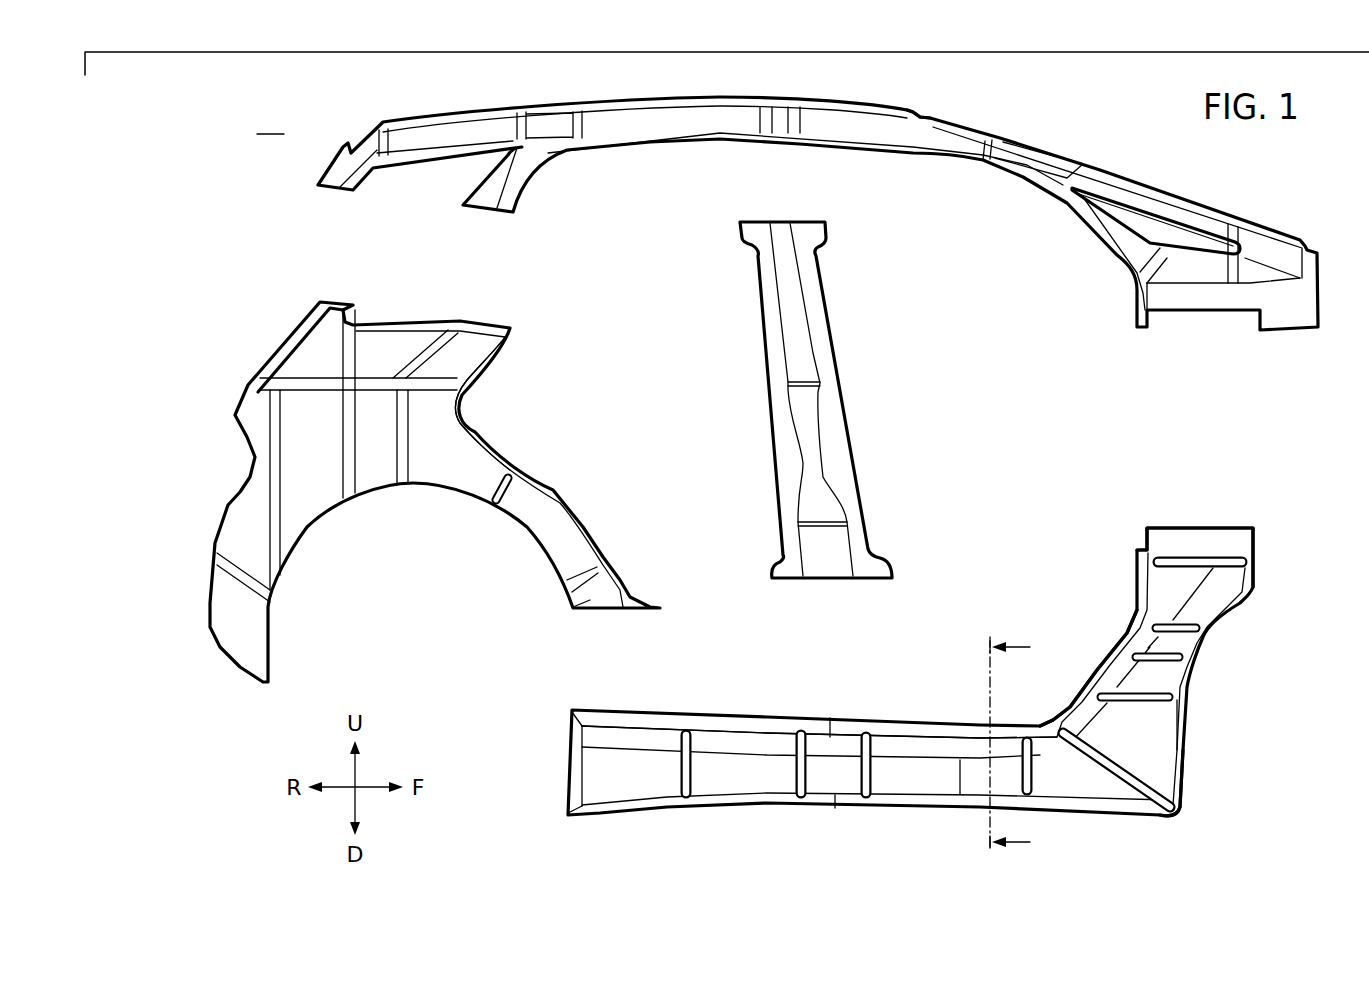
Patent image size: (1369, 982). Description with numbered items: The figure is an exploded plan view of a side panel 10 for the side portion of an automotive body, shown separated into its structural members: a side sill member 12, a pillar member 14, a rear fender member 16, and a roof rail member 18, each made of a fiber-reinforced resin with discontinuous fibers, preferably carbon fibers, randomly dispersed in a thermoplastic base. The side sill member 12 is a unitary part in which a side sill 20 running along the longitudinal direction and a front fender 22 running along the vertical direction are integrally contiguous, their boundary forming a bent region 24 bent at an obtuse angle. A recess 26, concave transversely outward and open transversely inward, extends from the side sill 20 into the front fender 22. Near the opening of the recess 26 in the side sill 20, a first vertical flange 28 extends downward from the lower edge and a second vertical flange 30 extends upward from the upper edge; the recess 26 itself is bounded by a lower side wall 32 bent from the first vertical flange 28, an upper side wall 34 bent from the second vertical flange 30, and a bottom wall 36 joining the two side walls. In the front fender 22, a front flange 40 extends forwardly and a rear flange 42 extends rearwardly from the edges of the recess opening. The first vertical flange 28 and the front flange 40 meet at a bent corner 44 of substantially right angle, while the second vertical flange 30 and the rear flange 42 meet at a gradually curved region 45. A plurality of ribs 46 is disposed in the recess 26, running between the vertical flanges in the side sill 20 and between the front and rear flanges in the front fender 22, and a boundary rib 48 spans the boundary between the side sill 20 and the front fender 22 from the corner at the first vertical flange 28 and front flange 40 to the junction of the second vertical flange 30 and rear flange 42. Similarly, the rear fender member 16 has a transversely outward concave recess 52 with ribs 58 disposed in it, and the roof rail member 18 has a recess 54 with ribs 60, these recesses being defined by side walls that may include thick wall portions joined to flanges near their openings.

The side panel 10 is at (270, 121).
The side sill member 12 is at (899, 692).
The pillar member 14 is at (838, 299).
The rear fender member 16 is at (416, 475).
The roof rail member 18 is at (972, 122).
The side sill 20 is at (648, 735).
The front fender 22 is at (1205, 605).
The bent region 24 is at (1125, 752).
The recess 26 is at (955, 775).
The first vertical flange 28 is at (738, 803).
The second vertical flange 30 is at (905, 725).
The lower side wall 32 is at (835, 810).
The upper side wall 34 is at (833, 717).
The bottom wall 36 is at (590, 766).
The front flange 40 is at (1180, 700).
The rear flange 42 is at (1132, 638).
The bent corner 44 is at (1172, 813).
The curved region 45 is at (1060, 720).
The ribs 46 is at (797, 770).
The boundary rib 48 is at (1155, 785).
The recess 52 is at (467, 457).
The recess 54 is at (905, 127).
The ribs 58 is at (410, 370).
The ribs 60 is at (385, 142).